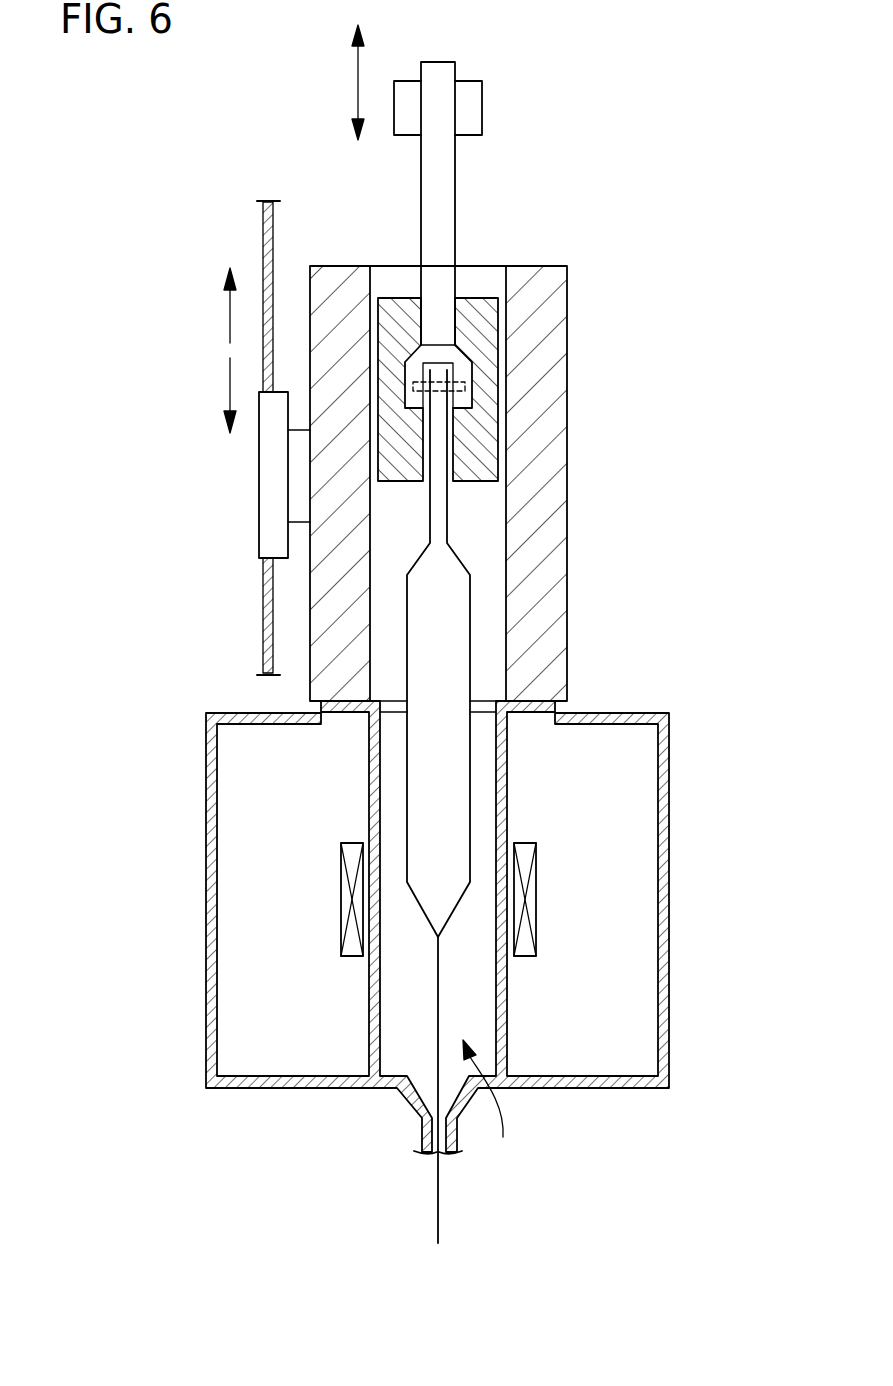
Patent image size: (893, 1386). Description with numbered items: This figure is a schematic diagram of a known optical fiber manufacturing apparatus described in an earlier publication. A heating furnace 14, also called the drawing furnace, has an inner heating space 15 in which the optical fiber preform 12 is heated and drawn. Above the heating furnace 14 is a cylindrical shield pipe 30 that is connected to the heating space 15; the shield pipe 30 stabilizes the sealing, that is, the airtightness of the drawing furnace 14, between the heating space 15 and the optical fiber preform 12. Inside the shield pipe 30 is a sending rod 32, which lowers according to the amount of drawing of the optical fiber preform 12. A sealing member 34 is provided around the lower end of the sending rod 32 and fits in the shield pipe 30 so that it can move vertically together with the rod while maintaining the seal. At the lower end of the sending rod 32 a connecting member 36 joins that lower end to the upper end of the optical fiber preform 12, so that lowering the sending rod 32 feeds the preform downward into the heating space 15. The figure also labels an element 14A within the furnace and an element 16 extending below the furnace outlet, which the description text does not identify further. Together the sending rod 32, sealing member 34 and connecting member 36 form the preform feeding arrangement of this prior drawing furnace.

The optical fiber preform 12 is at (447, 651).
The heating furnace 14 is at (670, 793).
The heater coil 14A is at (528, 902).
The heating space 15 is at (495, 1103).
The optical fiber 16 is at (438, 1222).
The shield pipe 30 is at (542, 465).
The sending rod 32 is at (455, 171).
The sealing member 34 is at (473, 300).
The connecting member 36 is at (463, 375).